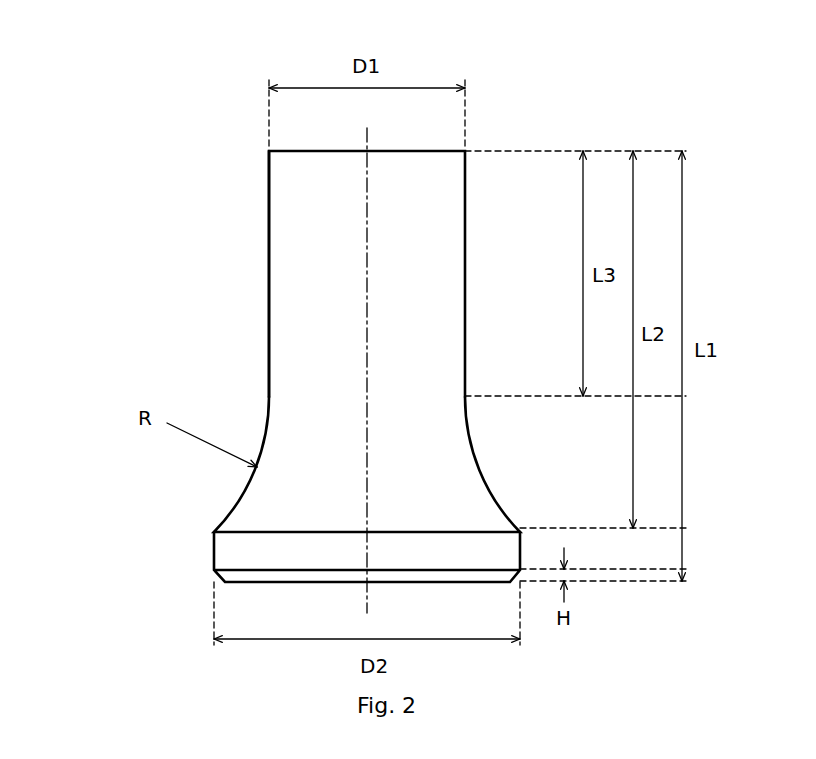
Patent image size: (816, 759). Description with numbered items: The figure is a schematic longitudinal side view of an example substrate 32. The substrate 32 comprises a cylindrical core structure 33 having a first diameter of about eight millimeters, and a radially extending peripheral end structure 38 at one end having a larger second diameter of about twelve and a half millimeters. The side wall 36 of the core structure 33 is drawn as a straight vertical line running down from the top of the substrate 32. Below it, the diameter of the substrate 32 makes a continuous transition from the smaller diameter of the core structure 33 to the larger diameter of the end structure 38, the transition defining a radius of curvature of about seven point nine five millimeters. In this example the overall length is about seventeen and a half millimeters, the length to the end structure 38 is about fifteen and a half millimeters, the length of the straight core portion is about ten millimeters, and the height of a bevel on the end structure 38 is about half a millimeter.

The substrate 32 is at (522, 68).
The cylindrical core structure 33 is at (202, 291).
The cylindrical side wall 36 is at (269, 233).
The radially extending peripheral end structure 38 is at (222, 548).